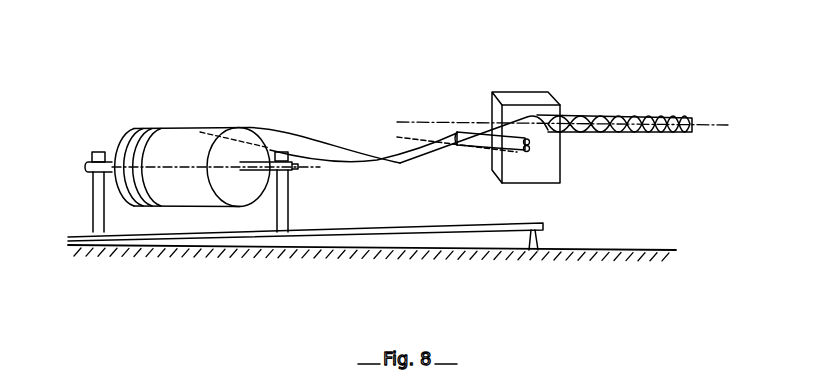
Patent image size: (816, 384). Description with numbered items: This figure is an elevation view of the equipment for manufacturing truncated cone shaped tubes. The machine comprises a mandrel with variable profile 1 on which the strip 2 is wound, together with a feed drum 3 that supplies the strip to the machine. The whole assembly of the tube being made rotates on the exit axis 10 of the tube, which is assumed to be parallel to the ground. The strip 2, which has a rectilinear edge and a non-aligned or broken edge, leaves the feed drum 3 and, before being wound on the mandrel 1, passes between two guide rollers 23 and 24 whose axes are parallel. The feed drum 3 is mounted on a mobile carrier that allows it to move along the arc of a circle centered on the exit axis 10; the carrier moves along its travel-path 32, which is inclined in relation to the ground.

The mandrel with variable profile 1 is at (521, 84).
The strip 2 is at (283, 141).
The feed drum 3 is at (162, 260).
The exit axis 10 is at (415, 119).
The guide roller 23 is at (524, 151).
The guide roller 24 is at (485, 138).
The travel-path 32 is at (381, 223).